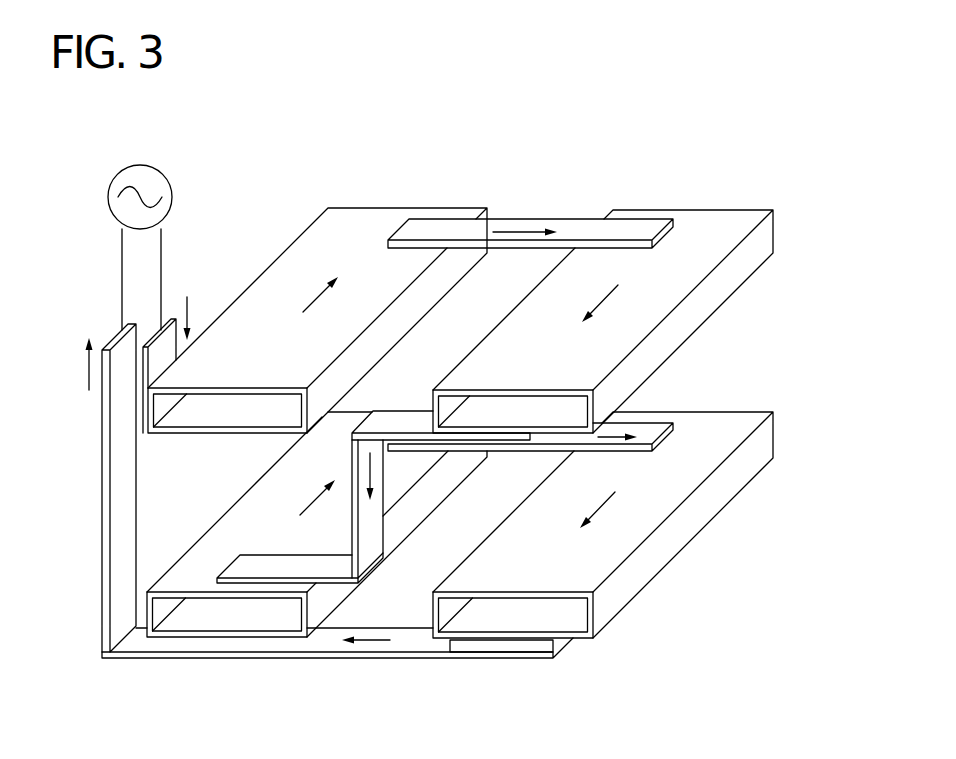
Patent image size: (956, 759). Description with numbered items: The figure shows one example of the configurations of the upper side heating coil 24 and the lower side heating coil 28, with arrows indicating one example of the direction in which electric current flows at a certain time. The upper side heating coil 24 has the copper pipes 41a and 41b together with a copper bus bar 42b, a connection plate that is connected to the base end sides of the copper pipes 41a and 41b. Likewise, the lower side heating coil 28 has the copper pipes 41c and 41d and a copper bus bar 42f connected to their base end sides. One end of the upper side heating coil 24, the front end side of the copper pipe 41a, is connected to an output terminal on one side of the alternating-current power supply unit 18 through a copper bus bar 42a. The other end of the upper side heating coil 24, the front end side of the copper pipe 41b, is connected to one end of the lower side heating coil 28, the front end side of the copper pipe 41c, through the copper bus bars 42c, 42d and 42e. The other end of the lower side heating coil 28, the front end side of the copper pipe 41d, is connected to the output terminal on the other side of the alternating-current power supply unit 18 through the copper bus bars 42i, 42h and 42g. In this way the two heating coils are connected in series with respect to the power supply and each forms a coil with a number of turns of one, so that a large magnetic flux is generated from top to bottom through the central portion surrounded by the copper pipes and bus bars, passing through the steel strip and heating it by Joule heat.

The alternating-current power supply unit 18 is at (148, 165).
The upper side heating coil 24 is at (483, 289).
The lower side heating coil 28 is at (463, 531).
The copper pipe 41a is at (378, 215).
The copper pipe 41b is at (692, 218).
The copper pipe 41c is at (202, 555).
The copper pipe 41d is at (707, 428).
The copper bus bar 42a is at (168, 330).
The copper bus bar 42b is at (448, 233).
The copper bus bar 42c is at (410, 420).
The copper bus bar 42d is at (370, 528).
The copper bus bar 42e is at (267, 565).
The copper bus bar 42f is at (673, 425).
The copper bus bar 42g is at (103, 455).
The copper bus bar 42h is at (222, 655).
The copper bus bar 42i is at (495, 653).